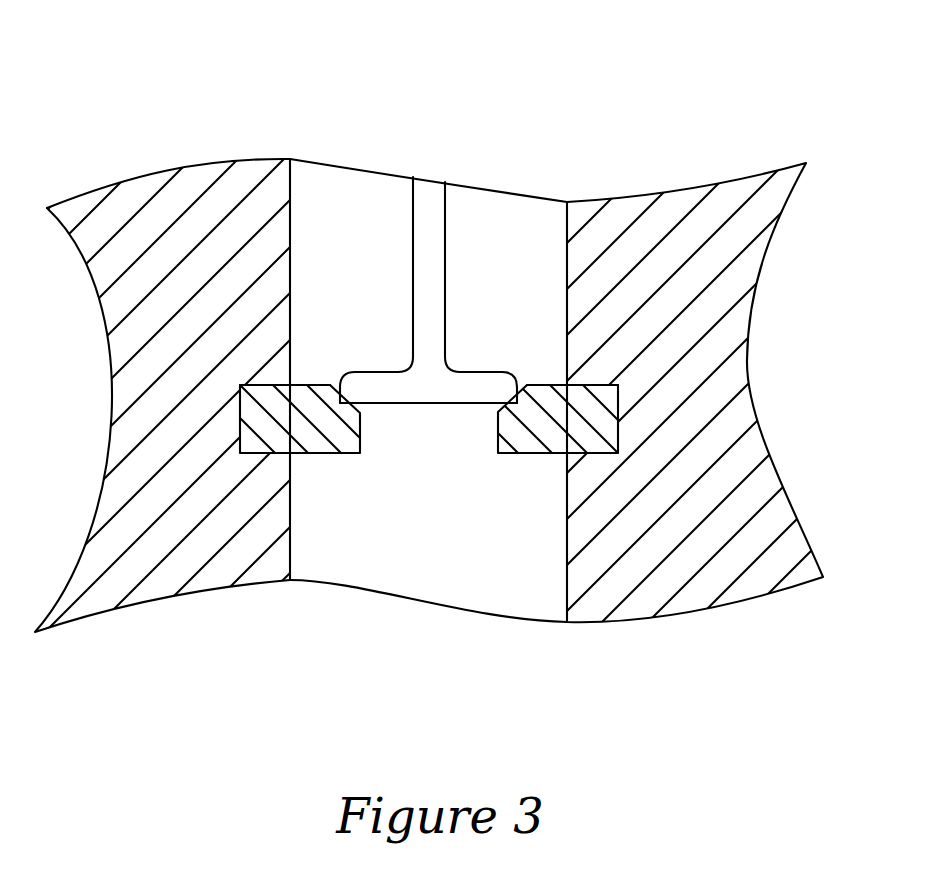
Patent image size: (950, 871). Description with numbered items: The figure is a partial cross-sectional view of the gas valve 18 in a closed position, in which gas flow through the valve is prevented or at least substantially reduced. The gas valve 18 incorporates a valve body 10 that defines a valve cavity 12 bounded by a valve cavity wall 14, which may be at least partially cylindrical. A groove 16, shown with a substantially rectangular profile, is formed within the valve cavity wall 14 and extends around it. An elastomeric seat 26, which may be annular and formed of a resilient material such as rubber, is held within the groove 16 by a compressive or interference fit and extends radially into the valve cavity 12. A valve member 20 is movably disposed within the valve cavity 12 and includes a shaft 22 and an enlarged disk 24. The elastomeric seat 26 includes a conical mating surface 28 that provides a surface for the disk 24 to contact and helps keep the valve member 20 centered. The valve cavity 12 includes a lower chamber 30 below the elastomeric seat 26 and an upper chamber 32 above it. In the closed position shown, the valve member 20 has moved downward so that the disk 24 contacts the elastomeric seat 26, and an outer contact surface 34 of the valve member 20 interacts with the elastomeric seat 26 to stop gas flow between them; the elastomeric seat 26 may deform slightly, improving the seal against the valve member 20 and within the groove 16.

The valve body 10 is at (140, 335).
The valve cavity 12 is at (540, 218).
The valve cavity wall 14 is at (290, 552).
The groove 16 is at (240, 419).
The gas valve 18 is at (228, 68).
The valve member 20 is at (384, 215).
The shaft 22 is at (433, 207).
The disk 24 is at (440, 387).
The elastomeric seat 26 is at (257, 442).
The conical mating surface 28 is at (335, 403).
The lower chamber 30 is at (454, 586).
The upper chamber 32 is at (361, 302).
The outer contact surface 34 is at (428, 403).